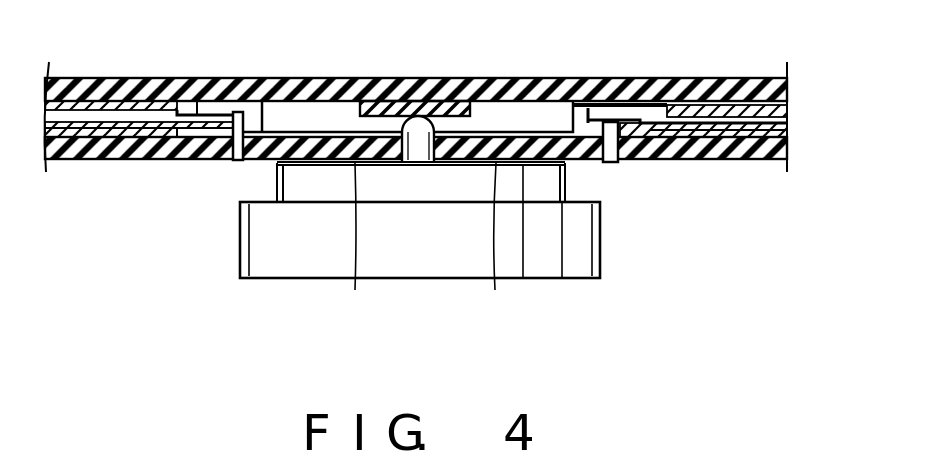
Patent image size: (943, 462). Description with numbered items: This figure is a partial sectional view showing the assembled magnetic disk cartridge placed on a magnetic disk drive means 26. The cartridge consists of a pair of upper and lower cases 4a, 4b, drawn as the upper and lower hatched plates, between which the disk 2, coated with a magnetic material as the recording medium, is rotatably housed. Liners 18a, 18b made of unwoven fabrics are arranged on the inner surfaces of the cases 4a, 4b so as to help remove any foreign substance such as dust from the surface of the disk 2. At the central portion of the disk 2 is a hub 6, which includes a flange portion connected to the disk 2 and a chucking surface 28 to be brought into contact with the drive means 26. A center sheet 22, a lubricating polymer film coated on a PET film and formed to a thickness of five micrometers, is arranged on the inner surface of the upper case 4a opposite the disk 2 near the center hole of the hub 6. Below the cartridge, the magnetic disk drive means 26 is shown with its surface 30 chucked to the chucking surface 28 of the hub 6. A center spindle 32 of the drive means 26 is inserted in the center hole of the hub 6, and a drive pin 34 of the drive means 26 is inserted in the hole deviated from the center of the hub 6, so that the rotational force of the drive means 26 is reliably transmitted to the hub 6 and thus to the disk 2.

The disk 2 is at (760, 82).
The upper case 4a is at (623, 82).
The lower case 4b is at (700, 160).
The hub 6 is at (595, 153).
The liner 18a is at (705, 82).
The liner 18b is at (758, 160).
The center sheet 22 is at (392, 82).
The magnetic disk drive means 26 is at (280, 265).
The chucking surface 28 is at (277, 167).
The surface 30 is at (357, 241).
The center spindle 32 is at (415, 150).
The drive pin 34 is at (522, 241).